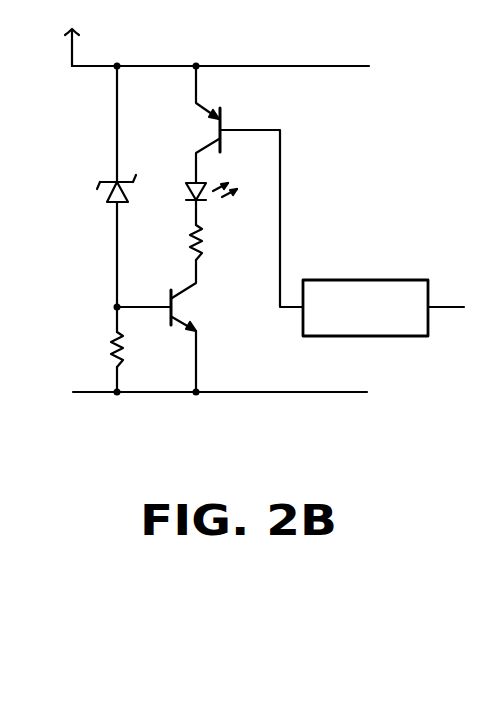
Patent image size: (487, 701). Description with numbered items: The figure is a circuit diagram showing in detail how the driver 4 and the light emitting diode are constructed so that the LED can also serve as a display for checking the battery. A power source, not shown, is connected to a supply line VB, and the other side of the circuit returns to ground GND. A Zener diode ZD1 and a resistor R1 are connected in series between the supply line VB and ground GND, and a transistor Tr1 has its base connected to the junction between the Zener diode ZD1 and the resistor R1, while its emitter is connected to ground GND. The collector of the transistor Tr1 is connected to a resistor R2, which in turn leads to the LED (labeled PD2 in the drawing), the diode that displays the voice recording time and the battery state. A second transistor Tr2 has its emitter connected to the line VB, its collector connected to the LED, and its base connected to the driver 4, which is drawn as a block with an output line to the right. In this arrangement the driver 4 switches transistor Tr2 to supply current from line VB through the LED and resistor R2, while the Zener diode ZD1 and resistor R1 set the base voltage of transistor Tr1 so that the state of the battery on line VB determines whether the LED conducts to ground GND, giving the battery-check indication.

The Zener diode ZD1 is at (94, 179).
The LED PD2 is at (140, 172).
The transistor Tr2 is at (249, 186).
The element LED is at (226, 205).
The resistor R2 is at (210, 242).
The transistor Tr1 is at (174, 326).
The resistor R1 is at (132, 349).
The driver 4 is at (358, 280).
The line VB is at (293, 66).
The ground GND is at (290, 392).